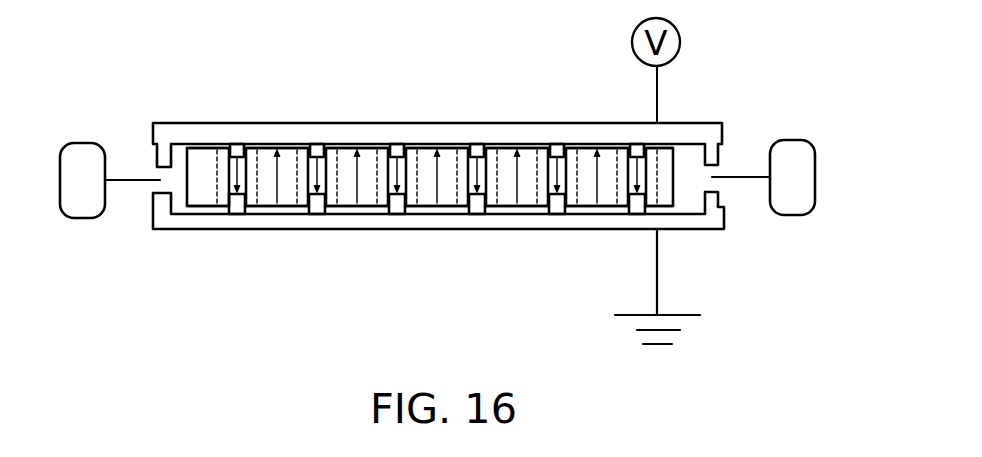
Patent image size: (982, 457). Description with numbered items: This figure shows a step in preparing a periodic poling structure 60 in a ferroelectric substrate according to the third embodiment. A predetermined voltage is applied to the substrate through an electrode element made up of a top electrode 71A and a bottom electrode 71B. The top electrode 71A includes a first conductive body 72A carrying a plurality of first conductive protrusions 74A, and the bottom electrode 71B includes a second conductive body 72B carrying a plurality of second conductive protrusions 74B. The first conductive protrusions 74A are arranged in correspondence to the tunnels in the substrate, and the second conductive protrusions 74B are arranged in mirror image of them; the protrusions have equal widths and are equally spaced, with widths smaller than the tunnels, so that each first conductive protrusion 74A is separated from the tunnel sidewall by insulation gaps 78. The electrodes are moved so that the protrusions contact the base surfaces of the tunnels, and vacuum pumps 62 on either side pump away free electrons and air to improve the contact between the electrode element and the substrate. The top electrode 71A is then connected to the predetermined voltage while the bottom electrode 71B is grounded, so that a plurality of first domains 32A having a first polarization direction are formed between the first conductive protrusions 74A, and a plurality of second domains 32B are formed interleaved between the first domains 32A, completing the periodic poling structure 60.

The top electrode 71A is at (153, 135).
The bottom electrode 71B is at (155, 215).
The first conductive protrusions 74A is at (398, 152).
The second conductive protrusions 74B is at (397, 200).
The first conductive body 72A is at (342, 133).
The second conductive body 72B is at (343, 222).
The periodic poling structure 60 is at (208, 208).
The first domains 32A is at (527, 197).
The second domains 32B is at (568, 183).
The insulation gaps 78 is at (229, 150).
The vacuum pumps 62 is at (85, 142).